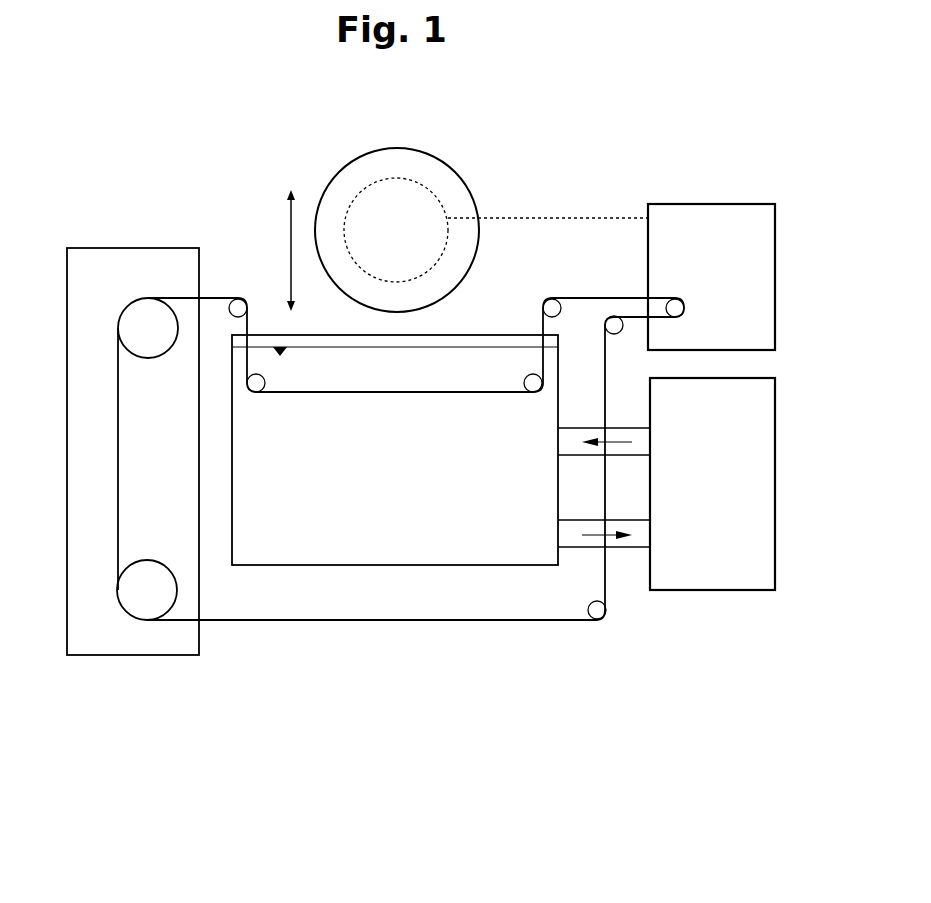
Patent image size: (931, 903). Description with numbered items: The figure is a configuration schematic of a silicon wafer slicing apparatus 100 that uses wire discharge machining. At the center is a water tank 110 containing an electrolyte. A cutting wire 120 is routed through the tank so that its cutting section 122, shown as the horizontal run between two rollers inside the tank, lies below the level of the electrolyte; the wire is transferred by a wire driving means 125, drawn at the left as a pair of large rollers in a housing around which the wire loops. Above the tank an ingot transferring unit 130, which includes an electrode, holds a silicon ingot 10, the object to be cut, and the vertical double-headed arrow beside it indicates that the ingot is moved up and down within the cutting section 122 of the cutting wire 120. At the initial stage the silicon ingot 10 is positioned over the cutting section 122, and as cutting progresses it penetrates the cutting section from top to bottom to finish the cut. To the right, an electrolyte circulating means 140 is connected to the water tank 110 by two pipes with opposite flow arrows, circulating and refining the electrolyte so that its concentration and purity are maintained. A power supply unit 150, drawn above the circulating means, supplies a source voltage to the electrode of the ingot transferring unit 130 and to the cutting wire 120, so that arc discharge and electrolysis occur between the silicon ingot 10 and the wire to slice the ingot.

The silicon wafer slicing apparatus 100 is at (419, 660).
The silicon ingot 10 is at (447, 165).
The ingot transferring unit 130 is at (372, 182).
The power supply unit 150 is at (713, 204).
The electrolyte circulating means 140 is at (713, 590).
The water tank 110 is at (323, 565).
The cutting section 122 is at (545, 403).
The wire driving means 125 is at (132, 655).
The cutting wire 120 is at (513, 621).